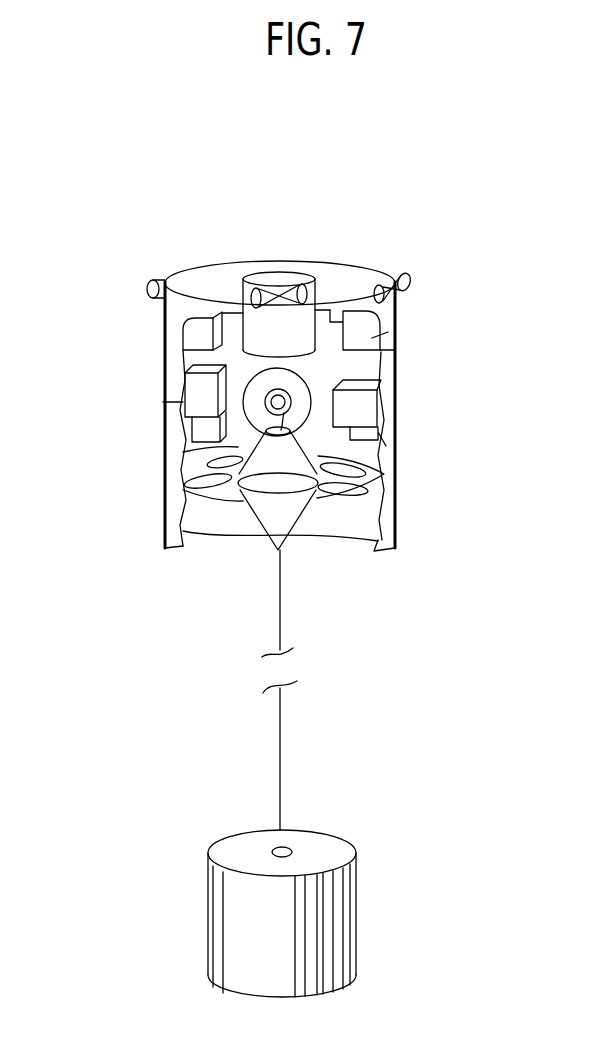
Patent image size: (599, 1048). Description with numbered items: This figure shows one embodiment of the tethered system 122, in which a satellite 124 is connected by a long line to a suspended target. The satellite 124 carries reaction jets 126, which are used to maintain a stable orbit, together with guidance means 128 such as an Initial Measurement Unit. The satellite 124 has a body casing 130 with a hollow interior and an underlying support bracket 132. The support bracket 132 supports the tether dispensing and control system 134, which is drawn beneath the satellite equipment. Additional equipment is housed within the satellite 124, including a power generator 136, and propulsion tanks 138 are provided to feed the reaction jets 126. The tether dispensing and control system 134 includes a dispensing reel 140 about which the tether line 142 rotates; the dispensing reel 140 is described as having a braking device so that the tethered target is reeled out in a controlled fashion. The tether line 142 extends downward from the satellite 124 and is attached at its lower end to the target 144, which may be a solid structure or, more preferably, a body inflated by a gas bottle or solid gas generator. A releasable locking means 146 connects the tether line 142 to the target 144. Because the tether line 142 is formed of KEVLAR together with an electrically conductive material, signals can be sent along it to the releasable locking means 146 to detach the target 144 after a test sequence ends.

The tethered system 122 is at (161, 517).
The satellite 124 is at (163, 402).
The reaction jets 126 is at (153, 280).
The guidance means 128 is at (316, 268).
The body casing 130 is at (387, 326).
The support bracket 132 is at (386, 484).
The tether dispensing and control system 134 is at (303, 447).
The power generator 136 is at (358, 410).
The propulsion tanks 138 is at (200, 338).
The dispensing reel 140 is at (260, 417).
The tether line 142 is at (280, 613).
The target 144 is at (347, 900).
The releasable locking means 146 is at (288, 849).